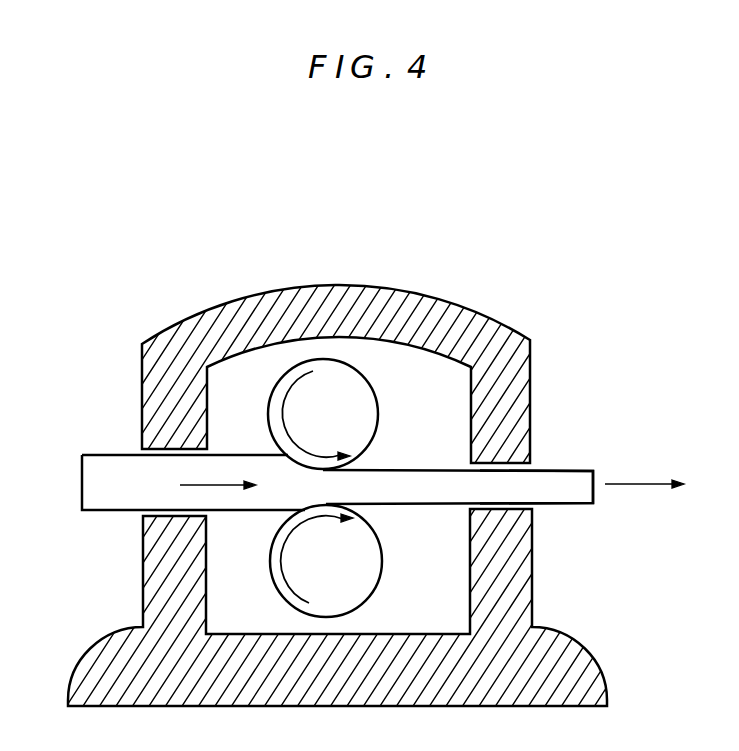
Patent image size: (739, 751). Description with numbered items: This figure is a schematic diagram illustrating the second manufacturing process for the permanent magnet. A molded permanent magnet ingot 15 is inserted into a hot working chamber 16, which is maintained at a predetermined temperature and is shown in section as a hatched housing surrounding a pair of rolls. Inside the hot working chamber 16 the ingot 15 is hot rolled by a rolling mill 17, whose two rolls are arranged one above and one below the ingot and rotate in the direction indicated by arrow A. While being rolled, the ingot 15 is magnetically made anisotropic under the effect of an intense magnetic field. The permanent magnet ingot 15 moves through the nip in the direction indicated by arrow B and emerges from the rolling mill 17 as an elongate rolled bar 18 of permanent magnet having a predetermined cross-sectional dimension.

The permanent magnet ingot 15 is at (92, 473).
The hot working chamber 16 is at (442, 373).
The rolling mill 17 is at (360, 420).
The elongate rolled bar 18 is at (547, 485).